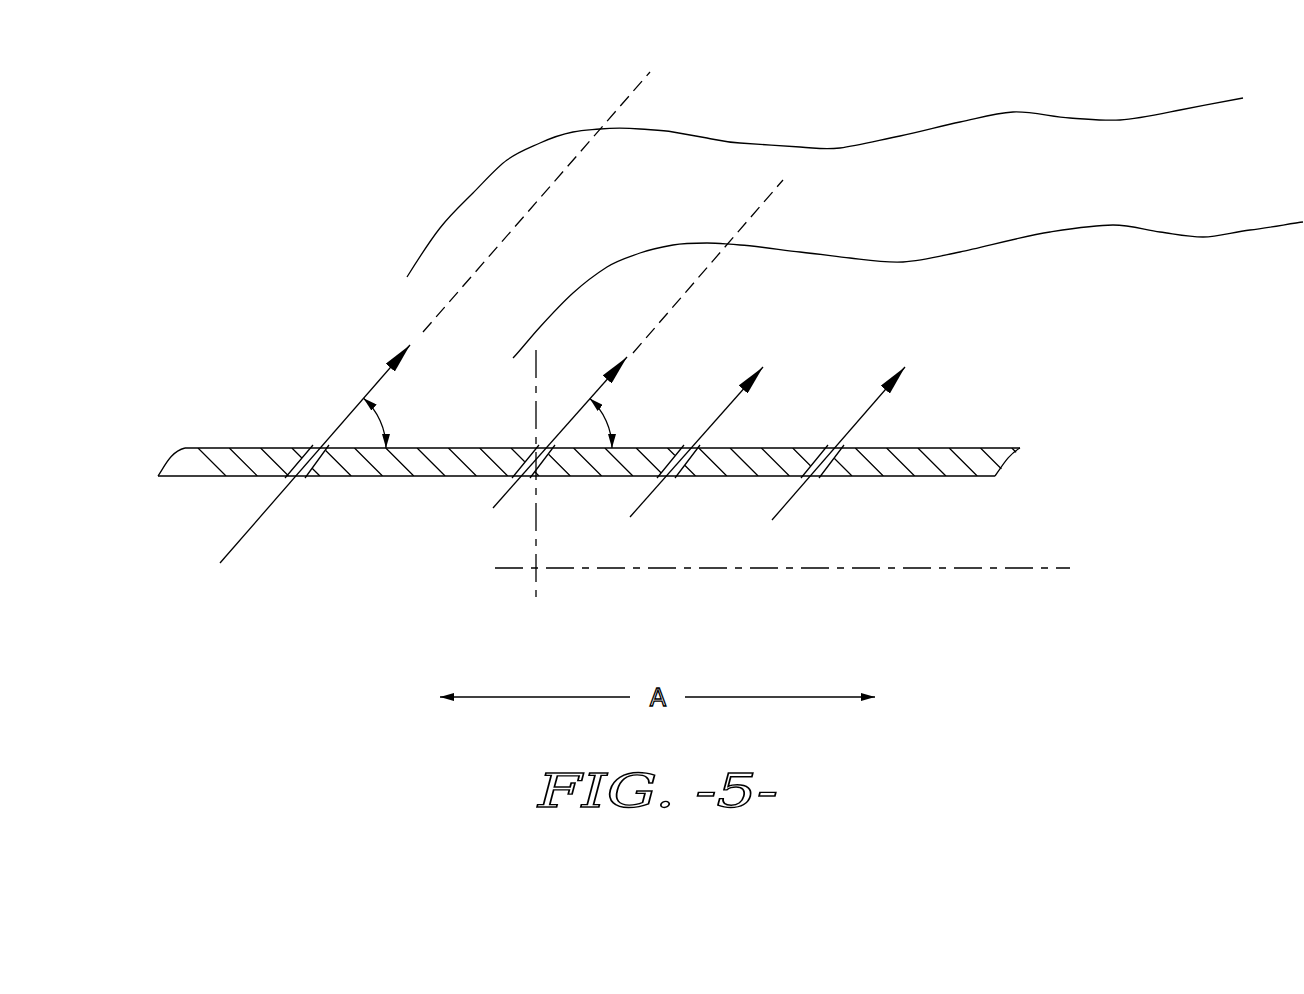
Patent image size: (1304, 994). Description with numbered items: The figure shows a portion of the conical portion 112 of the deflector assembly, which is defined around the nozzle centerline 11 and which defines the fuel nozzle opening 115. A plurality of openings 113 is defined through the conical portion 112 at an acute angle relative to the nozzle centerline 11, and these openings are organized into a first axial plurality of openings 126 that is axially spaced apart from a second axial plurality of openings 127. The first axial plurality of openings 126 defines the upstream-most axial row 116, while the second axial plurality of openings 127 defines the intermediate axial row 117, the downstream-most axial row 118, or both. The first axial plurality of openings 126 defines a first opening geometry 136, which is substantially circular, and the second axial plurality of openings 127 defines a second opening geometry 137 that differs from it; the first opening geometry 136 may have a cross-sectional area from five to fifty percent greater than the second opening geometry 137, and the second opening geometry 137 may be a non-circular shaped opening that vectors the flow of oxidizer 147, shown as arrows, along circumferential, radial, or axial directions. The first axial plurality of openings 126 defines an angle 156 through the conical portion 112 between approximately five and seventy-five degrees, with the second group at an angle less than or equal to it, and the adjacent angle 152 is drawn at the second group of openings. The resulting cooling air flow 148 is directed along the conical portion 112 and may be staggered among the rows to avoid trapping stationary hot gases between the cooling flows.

The nozzle centerline 11 is at (952, 568).
The conical portion 112 is at (945, 477).
The plurality of openings 113 is at (317, 446).
The fuel nozzle opening 115 is at (356, 198).
The upstream-most axial row 116 is at (287, 518).
The intermediate axial row 117 is at (580, 524).
The downstream-most axial row 118 is at (812, 481).
The first axial plurality of openings 126 is at (233, 510).
The second axial plurality of openings 127 is at (699, 312).
The first opening geometry 136 is at (297, 481).
The second opening geometry 137 is at (655, 490).
The flow of oxidizer 147 is at (368, 392).
The cooling air flow 148 is at (1030, 111).
The hole angle 152 is at (609, 424).
The angle 156 is at (384, 423).